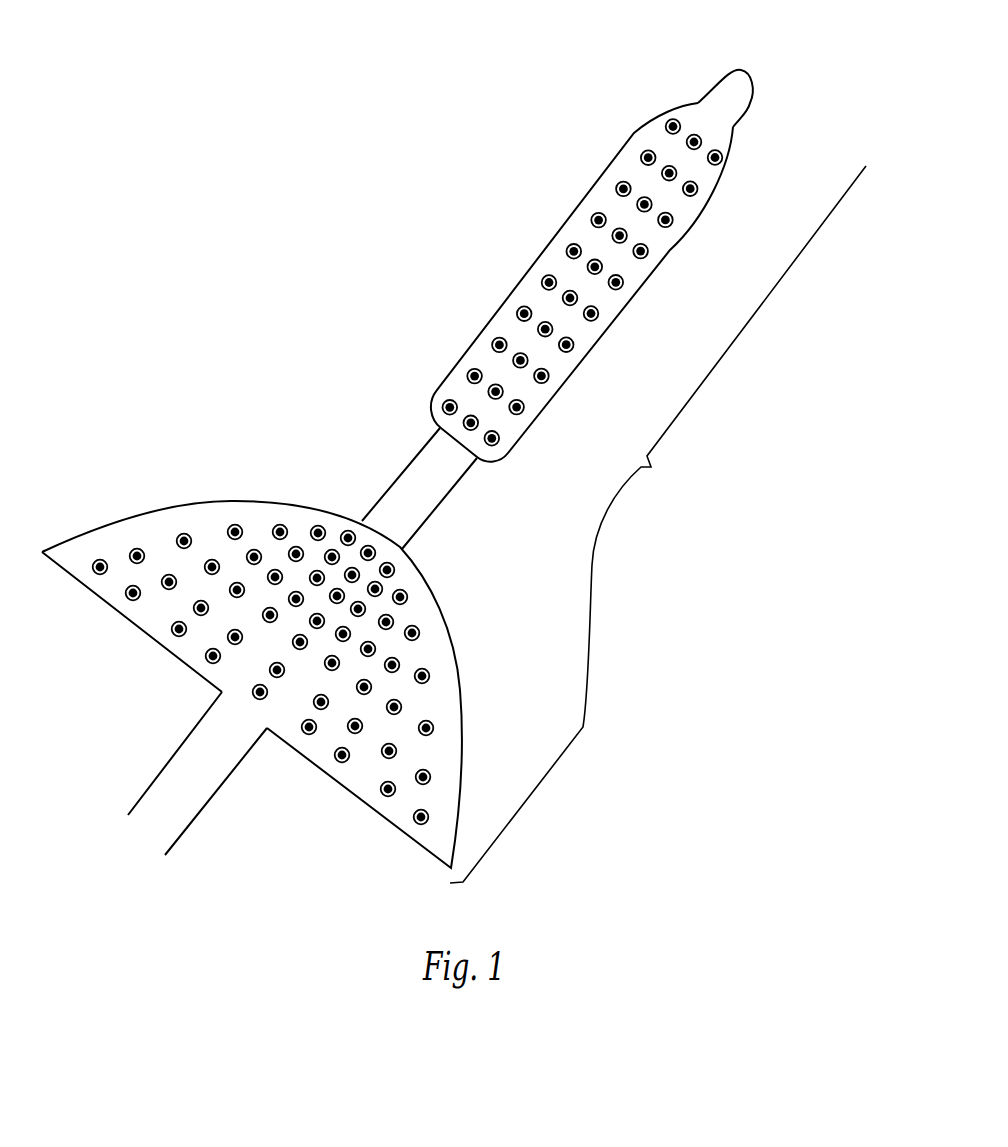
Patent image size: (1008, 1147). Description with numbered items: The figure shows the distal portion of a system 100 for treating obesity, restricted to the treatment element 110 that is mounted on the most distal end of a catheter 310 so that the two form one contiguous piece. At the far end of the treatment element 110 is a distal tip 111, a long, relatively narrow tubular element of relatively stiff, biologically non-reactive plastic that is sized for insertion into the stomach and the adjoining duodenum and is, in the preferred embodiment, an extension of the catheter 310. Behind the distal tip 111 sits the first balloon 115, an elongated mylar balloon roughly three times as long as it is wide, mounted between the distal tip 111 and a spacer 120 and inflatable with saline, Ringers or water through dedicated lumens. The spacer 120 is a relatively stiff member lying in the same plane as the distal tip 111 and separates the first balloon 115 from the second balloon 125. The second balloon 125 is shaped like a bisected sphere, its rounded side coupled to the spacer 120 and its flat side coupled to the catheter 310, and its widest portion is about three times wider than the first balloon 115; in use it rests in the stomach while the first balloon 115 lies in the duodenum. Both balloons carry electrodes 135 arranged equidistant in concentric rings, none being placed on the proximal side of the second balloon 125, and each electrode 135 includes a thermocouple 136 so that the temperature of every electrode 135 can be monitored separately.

The system 100 is at (226, 93).
The treatment element 110 is at (658, 524).
The distal tip 111 is at (750, 103).
The first balloon 115 is at (540, 253).
The spacer 120 is at (405, 467).
The second balloon 125 is at (232, 502).
The electrodes 135 is at (640, 152).
The thermocouples 136 is at (654, 151).
The catheter 310 is at (175, 752).